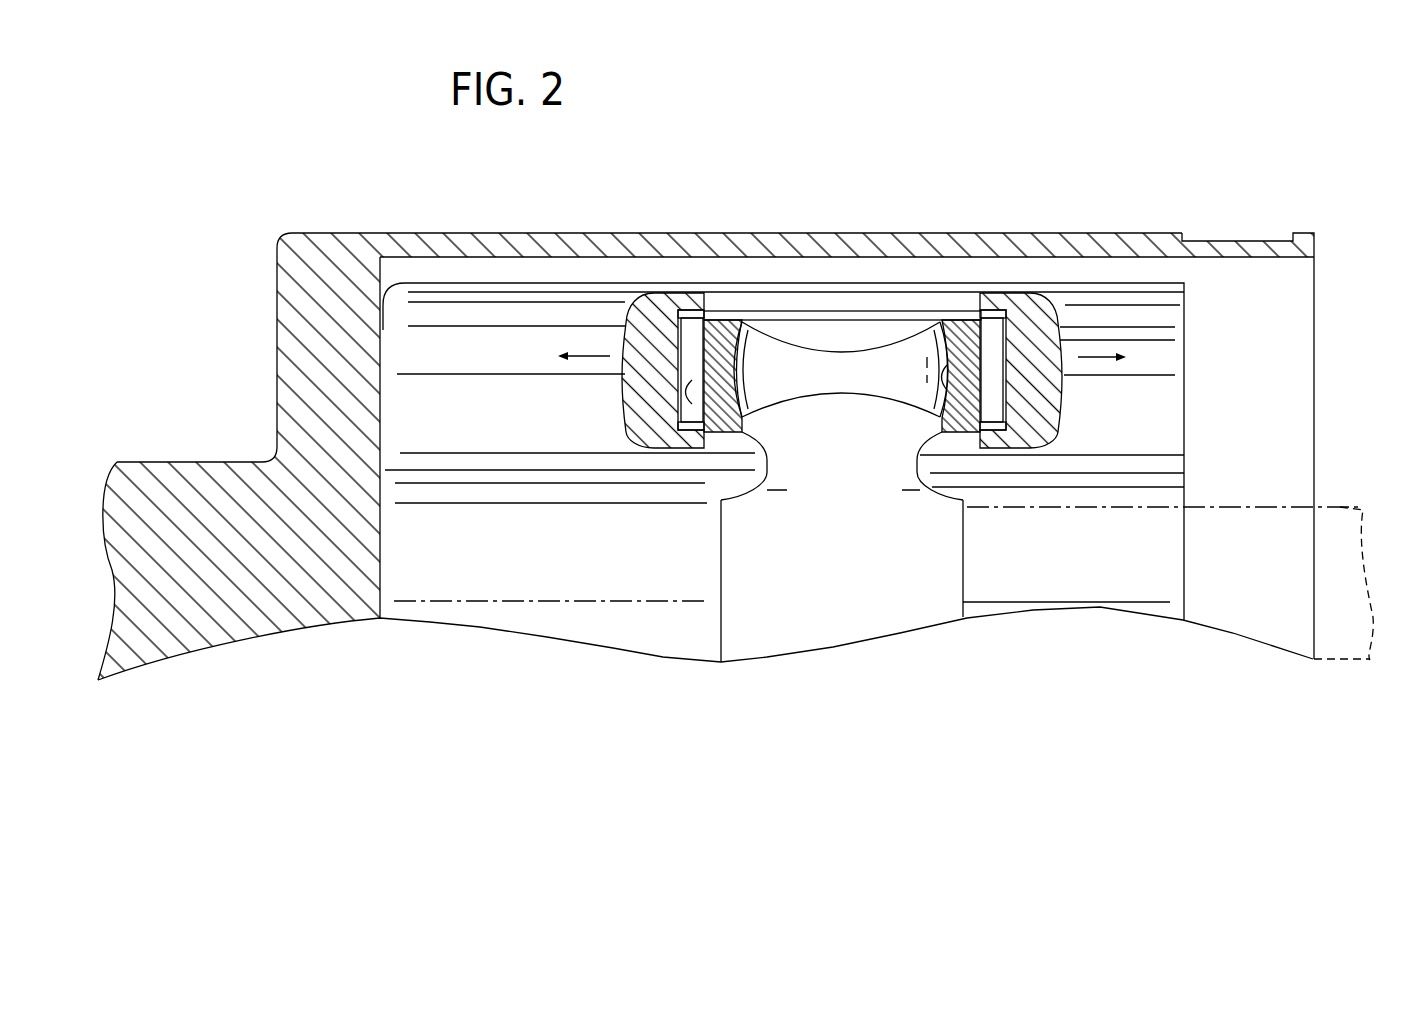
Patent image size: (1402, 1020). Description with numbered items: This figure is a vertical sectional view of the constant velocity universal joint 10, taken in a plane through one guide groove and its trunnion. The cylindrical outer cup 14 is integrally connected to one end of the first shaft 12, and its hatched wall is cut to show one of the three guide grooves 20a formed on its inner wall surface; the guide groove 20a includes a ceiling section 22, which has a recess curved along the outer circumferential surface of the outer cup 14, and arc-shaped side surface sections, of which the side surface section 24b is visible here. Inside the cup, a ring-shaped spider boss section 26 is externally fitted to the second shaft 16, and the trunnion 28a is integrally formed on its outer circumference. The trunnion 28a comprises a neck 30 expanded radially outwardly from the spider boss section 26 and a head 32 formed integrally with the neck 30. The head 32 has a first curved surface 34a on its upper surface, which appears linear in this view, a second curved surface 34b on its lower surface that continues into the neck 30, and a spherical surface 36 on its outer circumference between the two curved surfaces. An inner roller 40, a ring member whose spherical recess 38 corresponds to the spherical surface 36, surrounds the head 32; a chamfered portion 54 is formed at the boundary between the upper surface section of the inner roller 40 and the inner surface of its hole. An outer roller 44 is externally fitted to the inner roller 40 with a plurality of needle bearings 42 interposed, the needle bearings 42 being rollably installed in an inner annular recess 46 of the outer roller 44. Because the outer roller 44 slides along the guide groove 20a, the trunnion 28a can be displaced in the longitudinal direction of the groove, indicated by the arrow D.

The constant velocity universal joint 10 is at (1222, 163).
The first shaft 12 is at (185, 470).
The outer cup 14 is at (1062, 230).
The second shaft 16 is at (1347, 505).
The guide groove 20a is at (772, 272).
The ceiling section 22 is at (510, 257).
The side surface section 24b is at (1150, 397).
The spider boss section 26 is at (835, 615).
The trunnion 28a is at (853, 333).
The neck 30 is at (940, 468).
The head 32 is at (829, 352).
The first curved surface 34a is at (773, 320).
The second curved surface 34b is at (810, 397).
The spherical surface 36 is at (850, 380).
The spherical recess 38 is at (985, 397).
The inner roller 40 is at (958, 330).
The needle bearings 42 is at (1040, 318).
The outer roller 44 is at (643, 431).
The inner annular recess 46 is at (687, 397).
The chamfered portion 54 is at (740, 435).